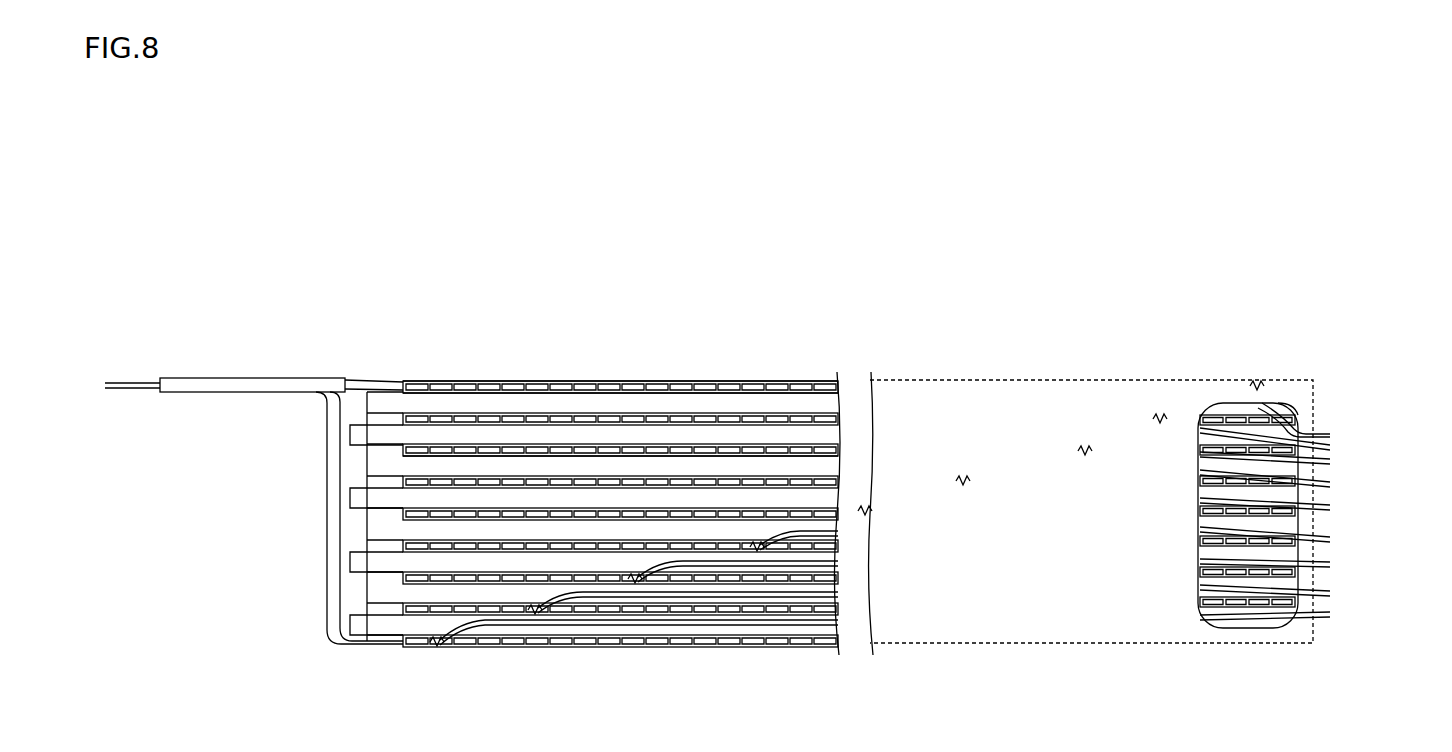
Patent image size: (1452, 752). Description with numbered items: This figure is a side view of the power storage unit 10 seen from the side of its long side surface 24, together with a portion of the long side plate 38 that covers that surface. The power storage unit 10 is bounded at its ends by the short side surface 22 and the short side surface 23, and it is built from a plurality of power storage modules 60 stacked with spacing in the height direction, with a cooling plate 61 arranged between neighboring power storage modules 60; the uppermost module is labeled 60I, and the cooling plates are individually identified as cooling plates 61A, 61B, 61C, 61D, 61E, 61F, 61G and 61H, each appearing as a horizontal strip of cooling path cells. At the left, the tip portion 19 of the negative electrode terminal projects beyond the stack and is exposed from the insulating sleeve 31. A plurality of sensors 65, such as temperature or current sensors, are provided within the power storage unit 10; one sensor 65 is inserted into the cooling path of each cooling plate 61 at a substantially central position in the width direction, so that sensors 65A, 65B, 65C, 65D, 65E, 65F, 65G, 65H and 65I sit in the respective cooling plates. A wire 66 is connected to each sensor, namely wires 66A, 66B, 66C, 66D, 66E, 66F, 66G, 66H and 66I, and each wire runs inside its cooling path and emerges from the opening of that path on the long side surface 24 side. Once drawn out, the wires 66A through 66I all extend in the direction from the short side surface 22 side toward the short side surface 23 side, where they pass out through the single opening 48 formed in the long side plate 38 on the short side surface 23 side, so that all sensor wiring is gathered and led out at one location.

The power storage unit 10 is at (543, 351).
The tip portion 19 is at (133, 382).
The short side surface 22 is at (350, 560).
The short side surface 23 is at (1302, 412).
The long side surface 24 is at (646, 432).
The insulating sleeve 31 is at (250, 378).
The long side plate 38 is at (1040, 608).
The opening 48 is at (1205, 630).
The power storage module 60 is at (762, 382).
The heater element I 60I is at (445, 382).
The cooling plate 61 is at (592, 382).
The cooling plate 61A is at (403, 641).
The cooling plate 61B is at (403, 609).
The cooling plate 61C is at (403, 578).
The cooling plate 61D is at (403, 546).
The cooling plate 61E is at (403, 514).
The cooling plate 61F is at (403, 482).
The cooling plate 61G is at (403, 450).
The cooling plate 61H is at (403, 419).
The sensor 65 is at (846, 519).
The sensor 65A is at (437, 647).
The sensor 65B is at (534, 615).
The sensor 65C is at (634, 584).
The sensor 65D is at (756, 552).
The sensor 65E is at (865, 505).
The sensor 65F is at (963, 475).
The sensor 65G is at (1085, 445).
The sensor 65H is at (1160, 413).
The sensor 65I is at (1257, 380).
The wire 66 is at (693, 564).
The wire 66A is at (483, 624).
The wire 66B is at (1330, 594).
The wire 66C is at (1330, 563).
The wire 66D is at (1330, 539).
The wire 66E is at (1330, 505).
The wire 66F is at (1330, 484).
The wire 66G is at (1330, 461).
The wire 66H is at (1330, 448).
The wire 66I is at (1330, 432).